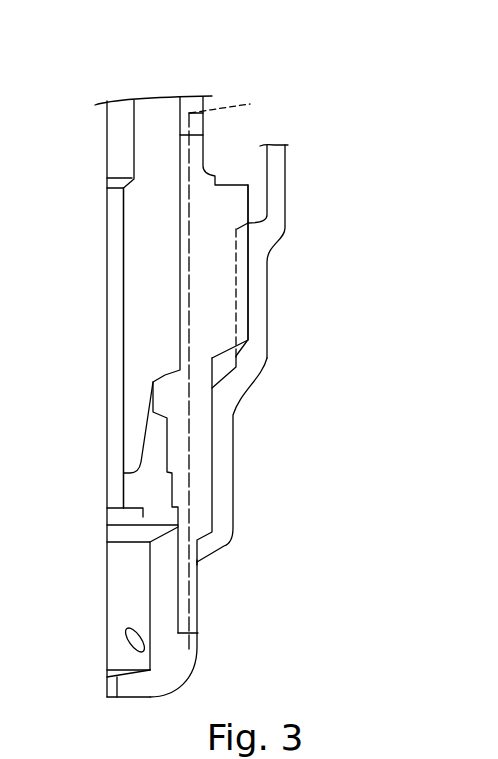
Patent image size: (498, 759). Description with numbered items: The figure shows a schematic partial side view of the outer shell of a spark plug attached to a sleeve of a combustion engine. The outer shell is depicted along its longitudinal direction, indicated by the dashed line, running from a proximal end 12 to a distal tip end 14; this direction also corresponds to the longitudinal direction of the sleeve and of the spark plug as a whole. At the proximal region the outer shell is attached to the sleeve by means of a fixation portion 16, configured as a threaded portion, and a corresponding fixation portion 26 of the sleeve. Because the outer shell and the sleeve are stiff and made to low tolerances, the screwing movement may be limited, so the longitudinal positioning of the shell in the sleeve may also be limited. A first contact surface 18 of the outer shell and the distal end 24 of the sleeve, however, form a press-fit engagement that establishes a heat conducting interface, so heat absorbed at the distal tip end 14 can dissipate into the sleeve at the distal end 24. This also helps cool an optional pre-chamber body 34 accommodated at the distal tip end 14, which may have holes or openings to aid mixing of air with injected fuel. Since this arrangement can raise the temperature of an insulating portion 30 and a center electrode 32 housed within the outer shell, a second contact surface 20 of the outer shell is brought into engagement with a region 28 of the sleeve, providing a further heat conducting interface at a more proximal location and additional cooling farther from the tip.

The proximal end 12 is at (207, 137).
The distal tip end 14 is at (207, 628).
The fixation portion 16 is at (250, 233).
The first contact surface 18 is at (206, 530).
The second contact surface 20 is at (223, 344).
The distal end 24 is at (215, 557).
The corresponding fixation portion 26 is at (253, 275).
The region 28 is at (230, 375).
The insulating portion 30 is at (145, 258).
The center electrode 32 is at (117, 340).
The pre-chamber body 34 is at (122, 603).